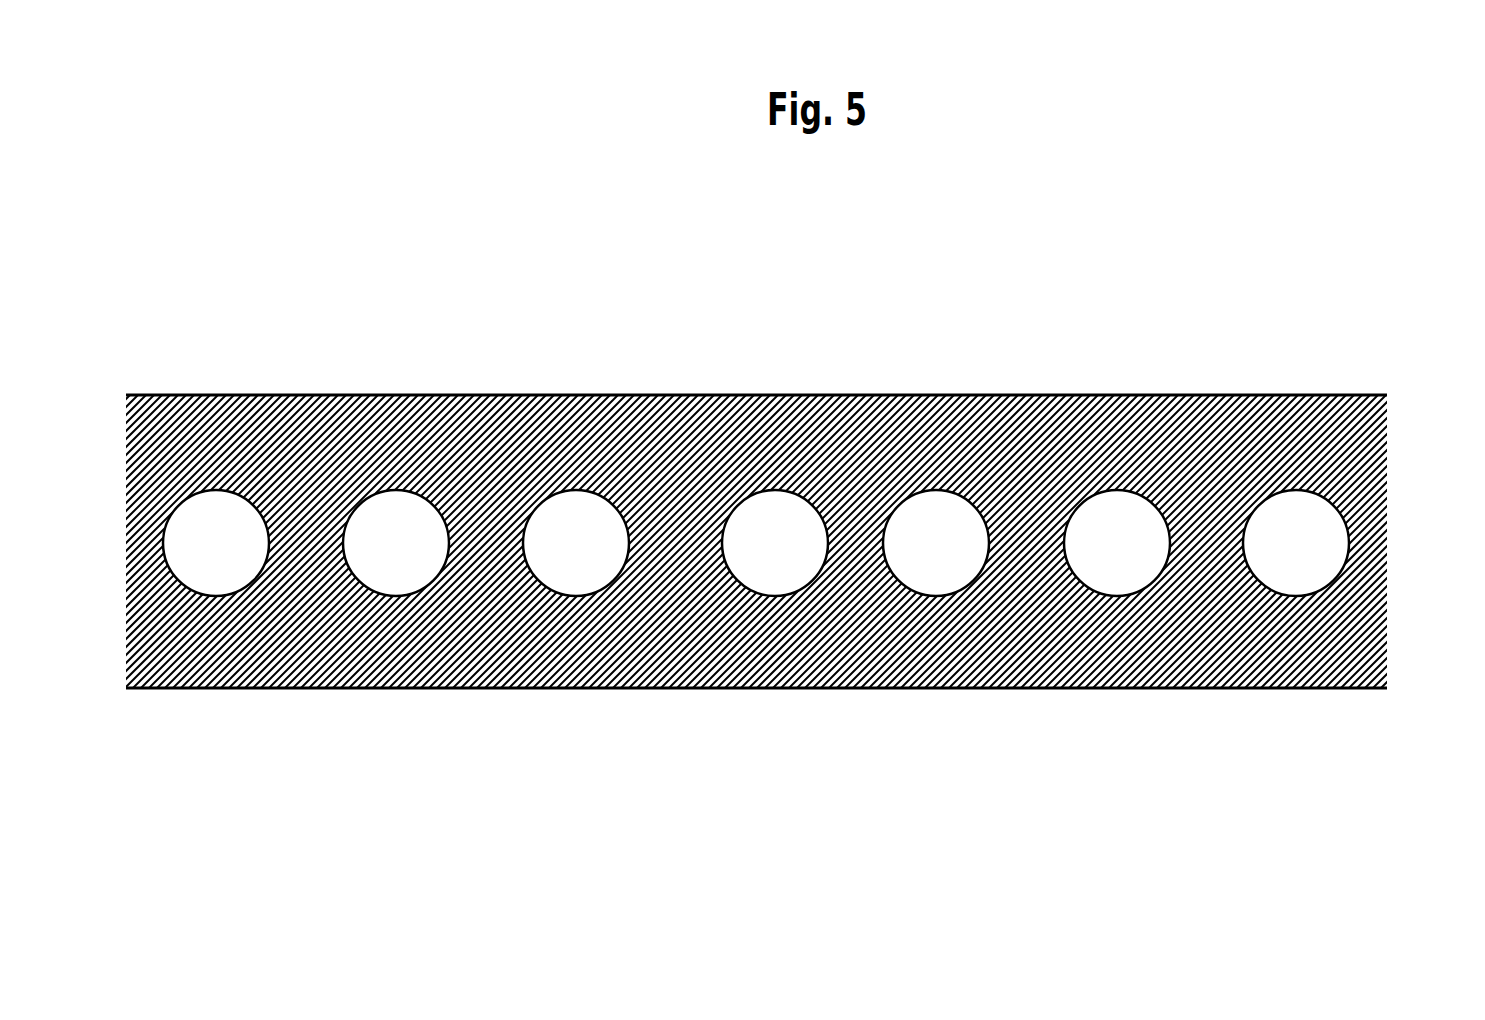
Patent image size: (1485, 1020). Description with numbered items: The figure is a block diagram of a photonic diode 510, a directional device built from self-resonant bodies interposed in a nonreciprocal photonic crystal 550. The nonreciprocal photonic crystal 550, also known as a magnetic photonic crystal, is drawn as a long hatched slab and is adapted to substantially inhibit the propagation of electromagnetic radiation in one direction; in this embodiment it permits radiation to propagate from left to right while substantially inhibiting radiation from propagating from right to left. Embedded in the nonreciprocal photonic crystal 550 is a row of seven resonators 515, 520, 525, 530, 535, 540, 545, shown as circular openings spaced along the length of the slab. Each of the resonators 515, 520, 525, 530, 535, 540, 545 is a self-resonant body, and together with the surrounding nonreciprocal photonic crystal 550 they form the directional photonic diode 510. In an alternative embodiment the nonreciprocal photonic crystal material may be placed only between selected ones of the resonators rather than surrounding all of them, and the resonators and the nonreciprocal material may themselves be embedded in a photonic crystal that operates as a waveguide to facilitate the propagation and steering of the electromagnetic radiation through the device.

The photonic diode 510 is at (593, 395).
The resonator 515 is at (307, 395).
The resonator 520 is at (487, 395).
The resonator 525 is at (665, 395).
The resonator 530 is at (865, 394).
The resonator 535 is at (1027, 394).
The resonator 540 is at (1208, 394).
The resonator 545 is at (1387, 394).
The nonreciprocal photonic crystal 550 is at (755, 688).